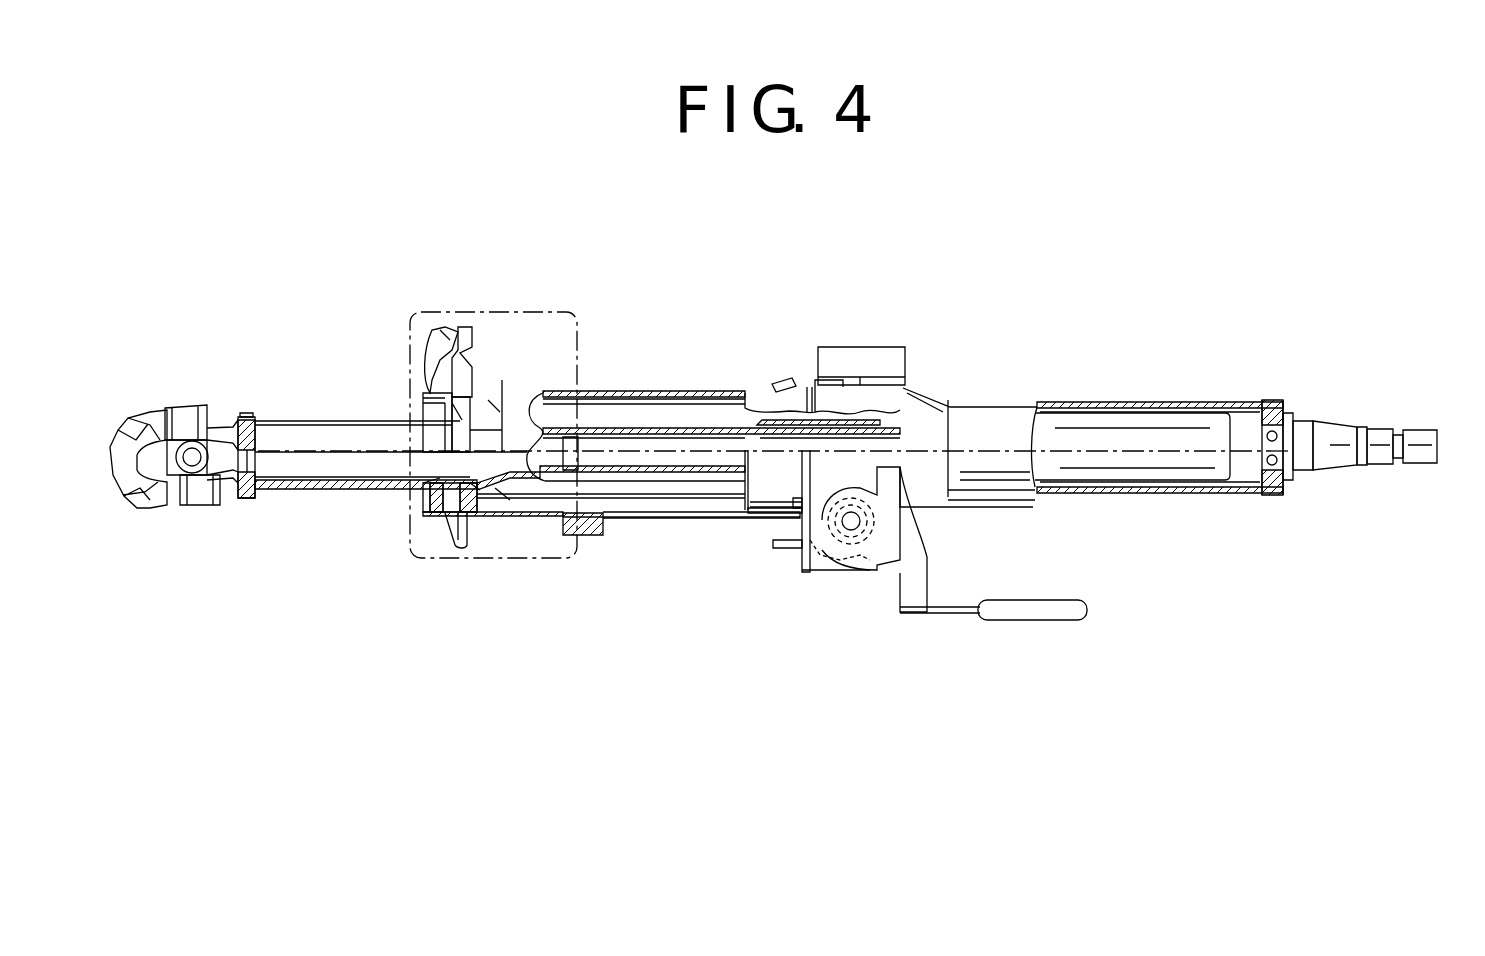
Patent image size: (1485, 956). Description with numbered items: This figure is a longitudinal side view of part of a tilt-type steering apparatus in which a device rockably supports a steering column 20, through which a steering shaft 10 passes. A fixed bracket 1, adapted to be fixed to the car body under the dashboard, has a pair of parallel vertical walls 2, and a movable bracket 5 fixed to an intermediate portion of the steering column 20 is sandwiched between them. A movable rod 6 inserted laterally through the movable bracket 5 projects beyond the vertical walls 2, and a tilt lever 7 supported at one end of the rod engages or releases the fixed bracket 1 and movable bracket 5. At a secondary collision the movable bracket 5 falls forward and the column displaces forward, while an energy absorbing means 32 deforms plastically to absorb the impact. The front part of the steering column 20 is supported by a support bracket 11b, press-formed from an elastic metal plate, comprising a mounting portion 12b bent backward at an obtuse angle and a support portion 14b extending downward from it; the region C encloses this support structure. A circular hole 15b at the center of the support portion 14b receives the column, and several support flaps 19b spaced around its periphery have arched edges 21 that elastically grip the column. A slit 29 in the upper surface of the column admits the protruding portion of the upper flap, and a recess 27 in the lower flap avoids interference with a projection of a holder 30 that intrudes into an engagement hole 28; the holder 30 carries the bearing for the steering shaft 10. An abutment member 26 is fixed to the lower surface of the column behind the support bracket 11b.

The fixed bracket 1 is at (870, 383).
The vertical walls 2 is at (862, 468).
The movable bracket 5 is at (822, 570).
The movable rod 6 is at (857, 528).
The tilt lever 7 is at (1030, 610).
The steering shaft 10 is at (1342, 445).
The support bracket 11b is at (468, 325).
The mounting portion 12b is at (452, 322).
The support portion 14b is at (462, 433).
The circular hole 15b is at (488, 400).
The support flaps 19b is at (430, 407).
The steering column 20 is at (702, 391).
The arched edge 21 is at (443, 437).
The abutment member 26 is at (593, 535).
The recess 27 is at (430, 485).
The engagement hole 28 is at (473, 490).
The slit 29 is at (430, 355).
The holder 30 is at (500, 493).
The energy absorbing means 32 is at (738, 518).
The detail region C is at (527, 308).